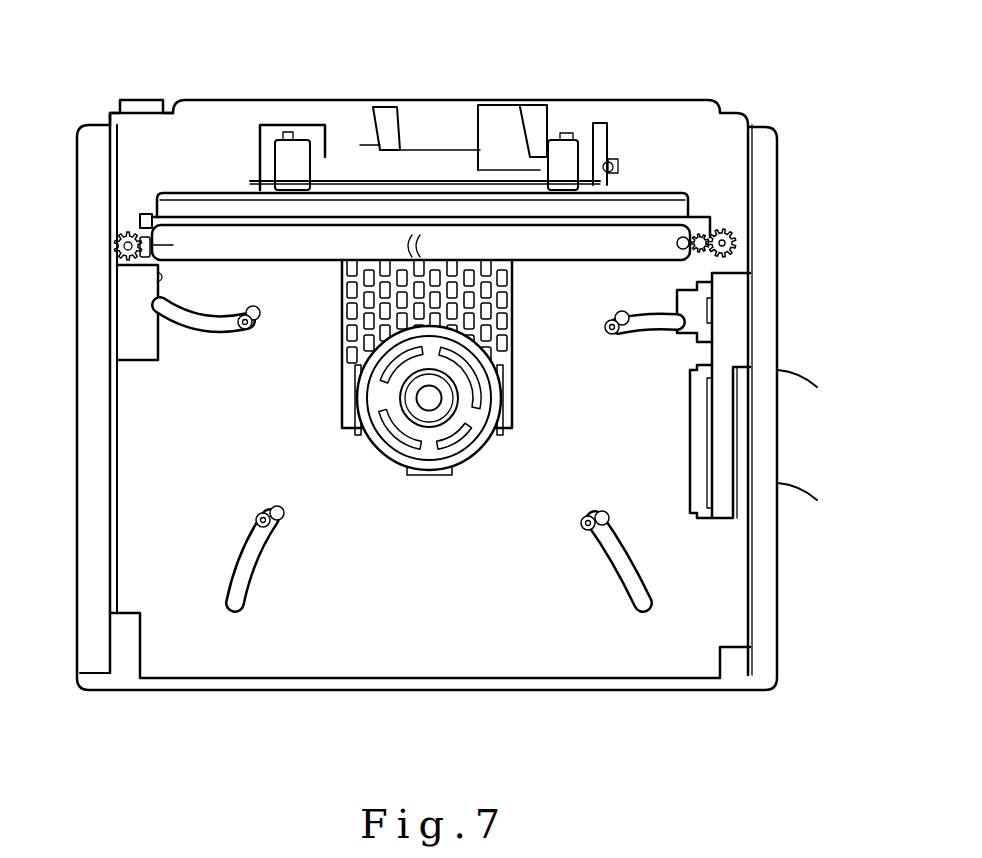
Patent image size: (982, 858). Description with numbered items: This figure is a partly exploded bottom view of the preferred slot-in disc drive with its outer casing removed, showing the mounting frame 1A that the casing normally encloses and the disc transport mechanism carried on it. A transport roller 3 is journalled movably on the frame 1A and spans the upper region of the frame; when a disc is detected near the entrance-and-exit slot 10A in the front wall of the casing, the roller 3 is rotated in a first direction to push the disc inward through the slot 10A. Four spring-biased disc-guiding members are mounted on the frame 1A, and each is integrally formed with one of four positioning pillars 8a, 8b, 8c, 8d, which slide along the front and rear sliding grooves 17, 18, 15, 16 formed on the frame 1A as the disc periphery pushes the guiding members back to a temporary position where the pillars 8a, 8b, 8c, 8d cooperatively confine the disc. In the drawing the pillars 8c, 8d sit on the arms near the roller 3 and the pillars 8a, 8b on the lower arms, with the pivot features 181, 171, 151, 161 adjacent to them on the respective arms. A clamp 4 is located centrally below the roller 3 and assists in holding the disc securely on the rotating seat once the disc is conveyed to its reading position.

The mounting frame 1A is at (797, 63).
The entrance-and-exit slot 10A is at (300, 98).
The transport roller 3 is at (120, 240).
The clamp 4 is at (438, 357).
The positioning pillar 8a is at (263, 528).
The positioning pillar 8b is at (588, 531).
The positioning pillar 8c is at (613, 320).
The positioning pillar 8d is at (244, 315).
The rear sliding groove 15 is at (237, 592).
The rear sliding groove 16 is at (635, 587).
The front sliding groove 17 is at (700, 313).
The front sliding groove 18 is at (210, 322).
The lever shaft 151 is at (278, 522).
The lever shaft 161 is at (603, 526).
The lever shaft 171 is at (623, 311).
The lever shaft 181 is at (255, 307).